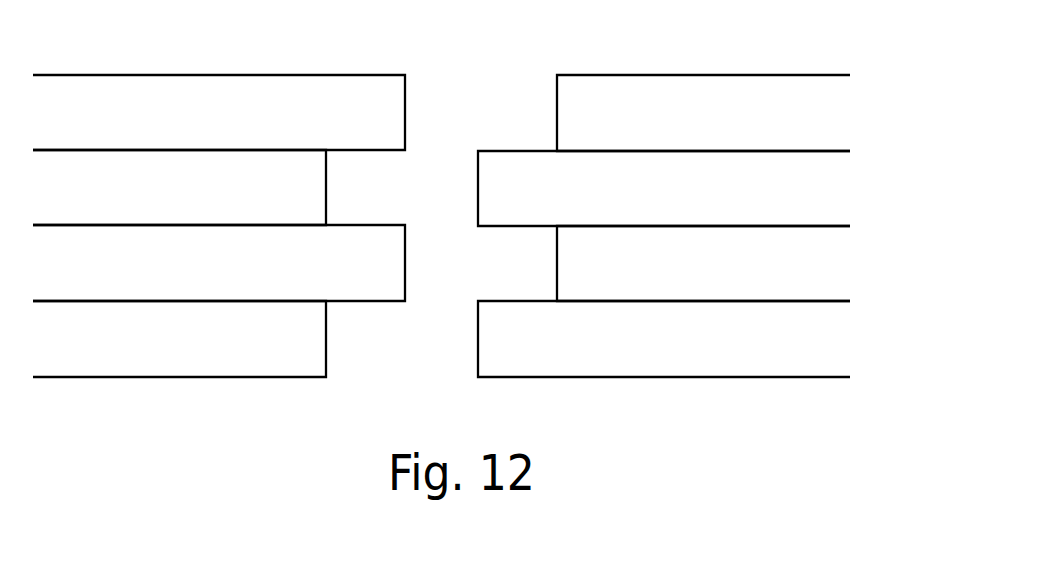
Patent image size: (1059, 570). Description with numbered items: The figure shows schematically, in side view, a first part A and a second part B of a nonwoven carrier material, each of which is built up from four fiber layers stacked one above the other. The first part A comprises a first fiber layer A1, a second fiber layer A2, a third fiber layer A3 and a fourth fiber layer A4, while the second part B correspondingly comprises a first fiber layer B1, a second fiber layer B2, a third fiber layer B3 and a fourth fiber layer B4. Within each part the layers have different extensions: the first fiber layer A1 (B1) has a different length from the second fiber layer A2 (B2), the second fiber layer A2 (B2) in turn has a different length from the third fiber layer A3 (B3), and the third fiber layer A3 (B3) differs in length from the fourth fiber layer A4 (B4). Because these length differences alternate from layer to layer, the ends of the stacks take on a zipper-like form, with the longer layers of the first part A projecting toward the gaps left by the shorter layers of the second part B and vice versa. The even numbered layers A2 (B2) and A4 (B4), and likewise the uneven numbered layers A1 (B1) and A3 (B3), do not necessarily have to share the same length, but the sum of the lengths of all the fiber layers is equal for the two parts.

The first part A is at (219, 202).
The first fiber layer A1 is at (219, 112).
The second fiber layer A2 is at (179, 187).
The third fiber layer A3 is at (219, 263).
The fourth fiber layer A4 is at (179, 339).
The second part B is at (664, 194).
The first fiber layer B1 is at (703, 113).
The second fiber layer B2 is at (664, 188).
The third fiber layer B3 is at (703, 263).
The fourth fiber layer B4 is at (664, 339).